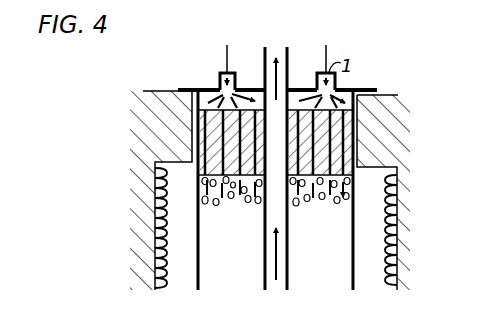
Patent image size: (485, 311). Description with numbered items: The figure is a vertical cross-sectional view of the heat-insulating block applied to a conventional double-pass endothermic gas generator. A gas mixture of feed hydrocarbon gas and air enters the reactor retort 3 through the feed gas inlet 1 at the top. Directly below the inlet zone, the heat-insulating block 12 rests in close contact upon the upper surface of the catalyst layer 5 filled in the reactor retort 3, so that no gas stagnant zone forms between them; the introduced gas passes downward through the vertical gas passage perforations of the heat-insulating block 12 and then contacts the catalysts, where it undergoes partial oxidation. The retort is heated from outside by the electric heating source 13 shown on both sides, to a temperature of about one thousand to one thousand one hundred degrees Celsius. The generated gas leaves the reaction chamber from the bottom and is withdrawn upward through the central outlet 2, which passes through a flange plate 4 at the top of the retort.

The feed gas inlet 1 is at (222, 72).
The outlet 2 is at (284, 47).
The reactor retort 3 is at (352, 266).
The flange plate 4 is at (360, 93).
The catalyst layer 5 is at (311, 204).
The heat-insulating block 12 is at (353, 133).
The electric heating source 13 is at (153, 242).